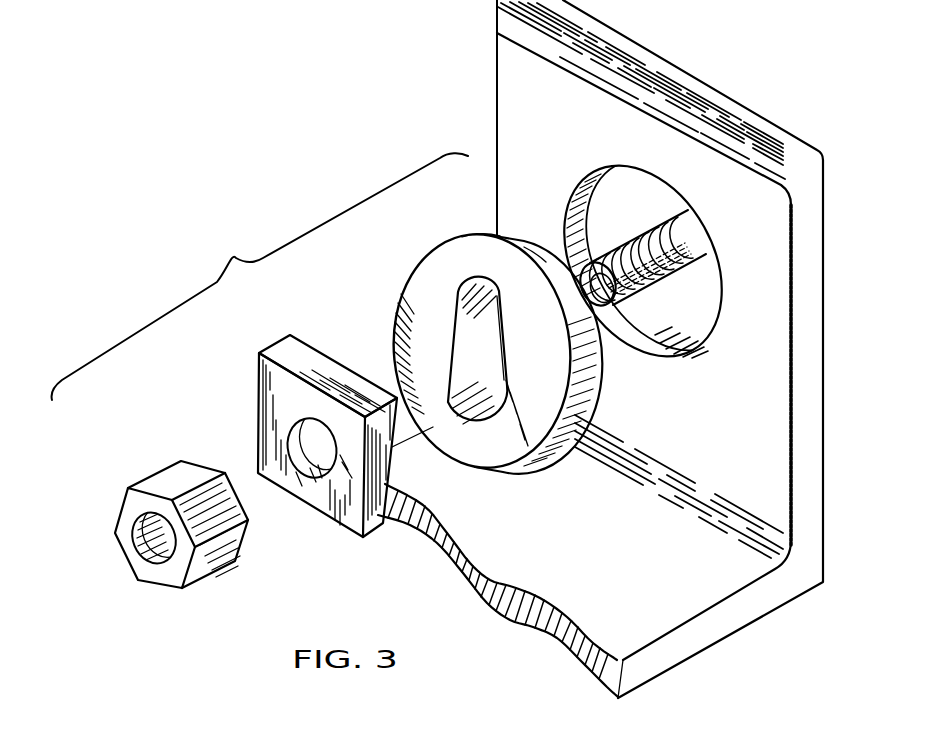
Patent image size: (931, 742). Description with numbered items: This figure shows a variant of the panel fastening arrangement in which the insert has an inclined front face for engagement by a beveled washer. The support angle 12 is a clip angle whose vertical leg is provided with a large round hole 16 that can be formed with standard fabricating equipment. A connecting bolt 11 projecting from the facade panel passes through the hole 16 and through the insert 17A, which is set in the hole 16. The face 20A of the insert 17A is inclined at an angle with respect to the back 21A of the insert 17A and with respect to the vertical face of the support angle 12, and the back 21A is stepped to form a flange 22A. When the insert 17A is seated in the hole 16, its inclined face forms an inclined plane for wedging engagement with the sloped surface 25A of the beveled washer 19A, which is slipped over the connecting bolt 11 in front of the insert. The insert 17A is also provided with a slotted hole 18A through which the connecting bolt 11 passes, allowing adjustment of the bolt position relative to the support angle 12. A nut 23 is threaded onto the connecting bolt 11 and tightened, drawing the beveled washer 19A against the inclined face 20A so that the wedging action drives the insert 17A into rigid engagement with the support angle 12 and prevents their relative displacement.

The support angle 12 is at (517, 63).
The round hole 16 is at (700, 288).
The connecting bolt 11 is at (675, 229).
The face of the insert 20A is at (430, 278).
The insert 17A is at (517, 468).
The slotted hole 18A is at (503, 340).
The back of the insert 21A is at (540, 247).
The flange 22A is at (498, 234).
The beveled washer 19A is at (285, 357).
The sloped surface 25A is at (335, 358).
The nut 23 is at (156, 485).